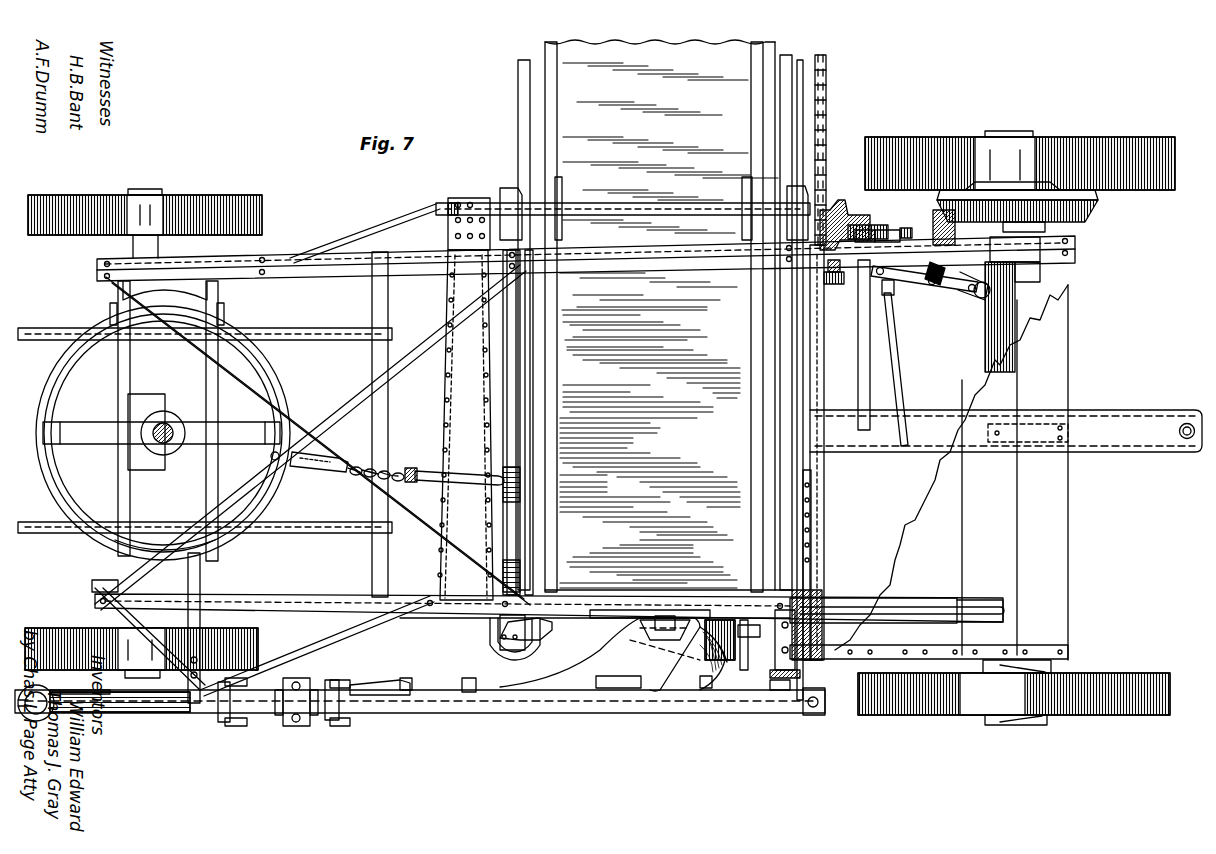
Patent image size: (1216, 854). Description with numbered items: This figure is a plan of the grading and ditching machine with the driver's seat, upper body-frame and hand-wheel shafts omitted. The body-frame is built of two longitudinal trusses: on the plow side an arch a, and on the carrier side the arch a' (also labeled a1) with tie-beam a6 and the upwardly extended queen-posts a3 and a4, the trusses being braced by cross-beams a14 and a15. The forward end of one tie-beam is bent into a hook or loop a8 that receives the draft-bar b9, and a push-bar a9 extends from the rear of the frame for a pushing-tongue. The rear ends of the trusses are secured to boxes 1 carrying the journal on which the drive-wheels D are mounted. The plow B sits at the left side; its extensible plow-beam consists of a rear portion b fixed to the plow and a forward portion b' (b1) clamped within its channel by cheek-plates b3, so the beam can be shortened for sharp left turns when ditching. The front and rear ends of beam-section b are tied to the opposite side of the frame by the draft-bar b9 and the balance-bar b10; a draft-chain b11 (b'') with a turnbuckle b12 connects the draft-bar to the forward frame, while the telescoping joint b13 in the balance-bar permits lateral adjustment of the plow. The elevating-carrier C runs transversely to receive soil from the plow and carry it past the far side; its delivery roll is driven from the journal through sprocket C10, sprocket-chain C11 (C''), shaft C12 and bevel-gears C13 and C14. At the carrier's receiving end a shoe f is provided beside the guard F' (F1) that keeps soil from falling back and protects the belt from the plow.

The arch a is at (549, 615).
The arch a' is at (586, 270).
The upper frame side bar a1 is at (615, 268).
The queen-post a3 is at (505, 195).
The queen-post a4 is at (812, 200).
The tie-beam a6 is at (340, 250).
The hook or loop a8 is at (448, 200).
The push-bar a9 is at (1153, 415).
The cross-beam a14 is at (510, 395).
The cross-beam a15 is at (775, 440).
The rear plow-beam portion b is at (420, 718).
The forward plow-beam portion b' is at (104, 732).
The pole hinge b1 is at (160, 712).
The cheek-plates b3 is at (245, 720).
The draft-bar b9 is at (452, 420).
The link b'' is at (452, 460).
The draft-chain b11 is at (405, 468).
The balance-bar b10 is at (815, 455).
The turnbuckle b12 is at (315, 462).
The telescoping joint b13 is at (828, 548).
The elevating-carrier C is at (655, 316).
The chain C'' is at (841, 150).
The sprocket-chain C11 is at (826, 128).
The sprocket C10 is at (840, 285).
The shaft C12 is at (918, 235).
The bevel-gear C13 is at (948, 283).
The bevel-gear C14 is at (1085, 220).
The drive-wheels D is at (1125, 188).
The boxes 1 is at (1030, 268).
The plow B is at (613, 654).
The shoe f is at (570, 628).
The guard F' is at (728, 653).
The guard F1 is at (728, 653).